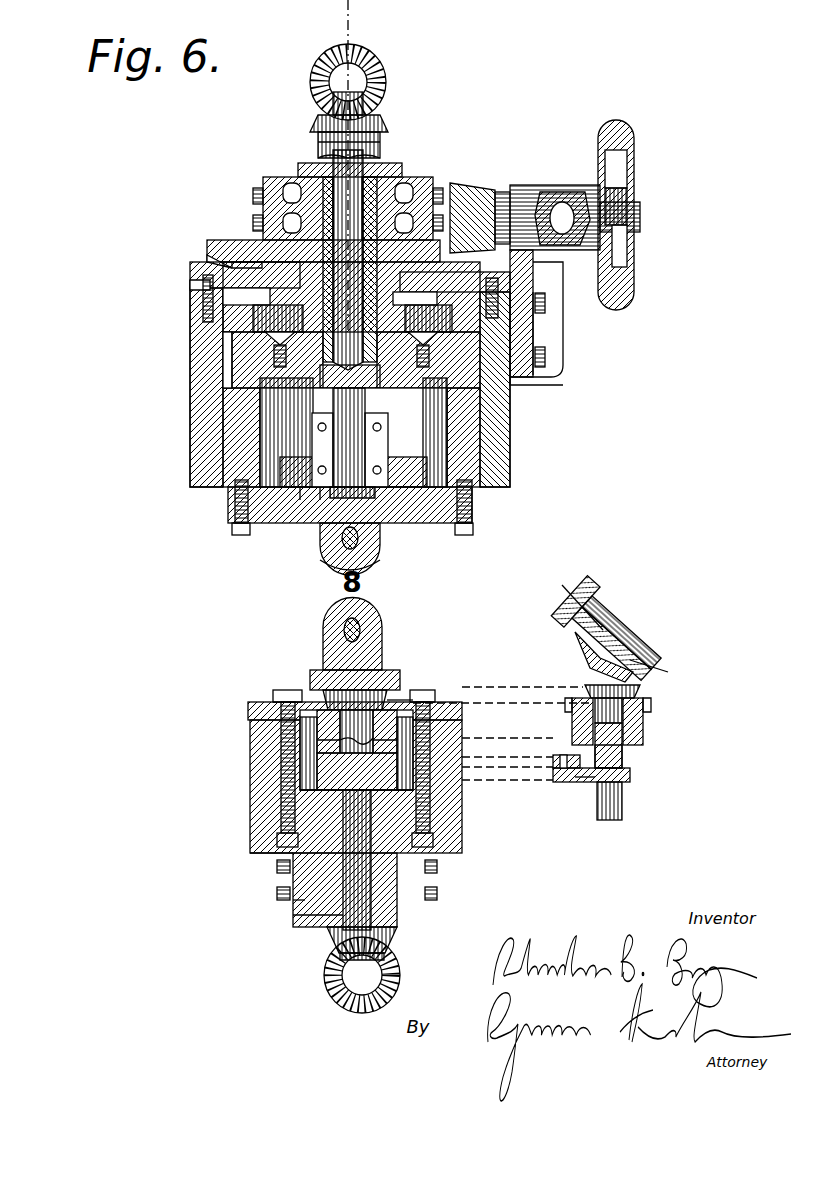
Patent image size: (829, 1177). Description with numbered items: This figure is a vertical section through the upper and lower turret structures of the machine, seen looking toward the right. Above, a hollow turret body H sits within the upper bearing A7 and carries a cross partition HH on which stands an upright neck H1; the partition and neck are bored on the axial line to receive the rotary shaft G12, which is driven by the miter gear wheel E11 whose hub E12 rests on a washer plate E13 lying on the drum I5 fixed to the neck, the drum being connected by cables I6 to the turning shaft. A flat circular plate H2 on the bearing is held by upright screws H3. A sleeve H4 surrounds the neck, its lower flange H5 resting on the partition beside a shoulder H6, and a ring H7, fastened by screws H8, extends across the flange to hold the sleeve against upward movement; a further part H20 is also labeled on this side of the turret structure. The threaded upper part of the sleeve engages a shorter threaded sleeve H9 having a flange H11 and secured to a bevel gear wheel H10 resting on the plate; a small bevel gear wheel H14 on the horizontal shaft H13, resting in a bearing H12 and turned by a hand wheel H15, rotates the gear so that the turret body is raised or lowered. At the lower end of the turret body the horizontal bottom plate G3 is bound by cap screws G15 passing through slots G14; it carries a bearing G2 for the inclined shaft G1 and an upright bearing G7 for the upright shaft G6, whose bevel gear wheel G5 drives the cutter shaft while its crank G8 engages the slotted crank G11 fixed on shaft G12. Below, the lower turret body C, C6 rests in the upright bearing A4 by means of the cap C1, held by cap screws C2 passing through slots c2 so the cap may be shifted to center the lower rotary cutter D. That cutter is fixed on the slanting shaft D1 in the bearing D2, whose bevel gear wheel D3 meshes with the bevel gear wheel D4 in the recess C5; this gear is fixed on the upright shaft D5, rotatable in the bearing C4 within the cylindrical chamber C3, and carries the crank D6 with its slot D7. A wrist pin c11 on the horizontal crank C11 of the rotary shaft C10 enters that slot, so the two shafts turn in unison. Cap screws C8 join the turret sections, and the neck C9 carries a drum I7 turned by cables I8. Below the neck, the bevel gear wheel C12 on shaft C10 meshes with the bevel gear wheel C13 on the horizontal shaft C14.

The rotary shaft G12 is at (318, 100).
The miter gear wheel E11 is at (380, 115).
The upright neck H1 is at (318, 128).
The hub E12 is at (382, 140).
The washer plate E13 is at (400, 166).
The horizontal crank G11 is at (366, 388).
The drum I5 is at (280, 177).
The metal strap or wire cable I6 is at (258, 225).
The sleeve H4 is at (300, 243).
The bevel gear wheel H10 is at (232, 268).
The interiorly screw threaded sleeve H9 is at (252, 262).
The outward directed flange H11 is at (210, 262).
The hollow turret body H is at (215, 440).
The upright screws H3 is at (192, 275).
The flat circular plate H2 is at (205, 285).
The shoulder H6 is at (255, 322).
The upper bearing A7 is at (272, 345).
The cross partition HH is at (258, 360).
The outward directed flange H5 is at (235, 372).
The upright bearing G7 is at (285, 480).
The horizontal crank G8 is at (336, 427).
The upright shaft G6 is at (300, 500).
The bevel gear wheel G5 is at (318, 500).
The horizontal bottom plate G3 is at (475, 505).
The slots G14 is at (238, 500).
The cap screws G15 is at (238, 530).
The inclined shaft G1 is at (365, 540).
The bearing G2 is at (382, 558).
The small bevel gear wheel H14 is at (470, 190).
The bearing H12 is at (590, 195).
The horizontal shaft H13 is at (632, 213).
The hand wheel H15 is at (615, 128).
The ring H7 is at (545, 330).
The screws H8 is at (547, 345).
The bracket arm H20 is at (563, 378).
The slanting rotary shaft D1 is at (382, 630).
The bearing D2 is at (398, 672).
The lower rotary cutter D is at (600, 600).
The bevel gear wheel D3 is at (662, 675).
The bevel gear wheel D4 is at (330, 690).
The upright shaft D5 is at (280, 716).
The circular plate or cap C1 is at (250, 700).
The upper section of turret body C is at (330, 767).
The bearing C4 is at (413, 745).
The cylindrical chamber C3 is at (397, 770).
The cap screws C2 is at (275, 690).
The slots c2 is at (285, 690).
The crank D6 is at (300, 740).
The upright bearing A4 is at (300, 780).
The recess C5 is at (440, 688).
The rotary shaft C10 is at (353, 912).
The horizontal crank C11 is at (300, 820).
The wrist pin c11 is at (575, 778).
The slot D7 is at (557, 747).
The lower section of turret body C6 is at (270, 840).
The cap screws C8 is at (290, 862).
The cables I8 is at (277, 893).
The drum I7 is at (305, 903).
The neck C9 is at (325, 915).
The bevel gear wheel C13 is at (340, 1000).
The horizontal shaft C14 is at (330, 1005).
The bevel gear wheel C12 is at (330, 965).